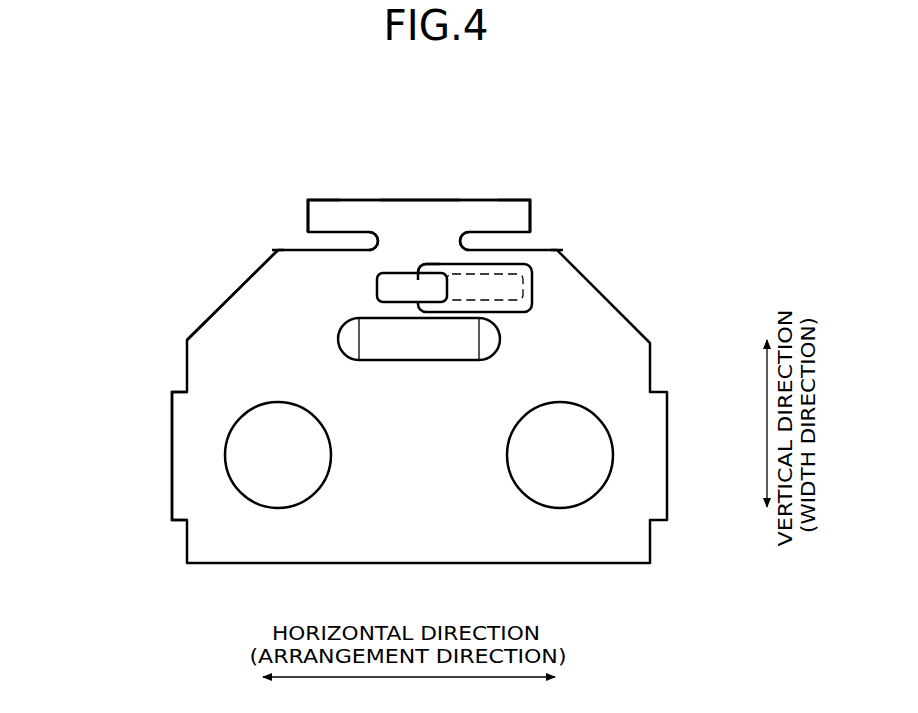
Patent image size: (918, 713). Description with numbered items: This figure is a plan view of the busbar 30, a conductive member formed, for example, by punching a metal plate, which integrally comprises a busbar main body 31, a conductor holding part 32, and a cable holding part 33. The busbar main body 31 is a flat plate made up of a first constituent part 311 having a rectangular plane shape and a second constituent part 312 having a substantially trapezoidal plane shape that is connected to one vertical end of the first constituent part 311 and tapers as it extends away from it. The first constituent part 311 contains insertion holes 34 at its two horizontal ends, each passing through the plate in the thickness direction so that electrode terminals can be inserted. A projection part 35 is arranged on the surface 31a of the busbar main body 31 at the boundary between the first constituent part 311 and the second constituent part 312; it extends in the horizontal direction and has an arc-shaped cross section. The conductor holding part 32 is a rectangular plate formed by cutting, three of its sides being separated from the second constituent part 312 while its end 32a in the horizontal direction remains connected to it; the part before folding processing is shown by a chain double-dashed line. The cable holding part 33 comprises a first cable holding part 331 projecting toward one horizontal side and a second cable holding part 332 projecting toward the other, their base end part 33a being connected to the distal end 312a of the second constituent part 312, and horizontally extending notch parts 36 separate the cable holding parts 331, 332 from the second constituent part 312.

The busbar 30 is at (236, 158).
The busbar main body 31 is at (68, 307).
The first constituent part 311 is at (166, 432).
The second constituent part 312 is at (201, 319).
The distal end 312a is at (280, 249).
The surface 31a is at (585, 362).
The conductor holding part 32 is at (405, 268).
The end 32a is at (424, 264).
The cable holding part 33 is at (305, 92).
The first cable holding part 331 is at (518, 198).
The second cable holding part 332 is at (322, 198).
The base end part 33a is at (410, 200).
The insertion holes 34 is at (532, 499).
The projection part 35 is at (505, 332).
The notch parts 36 is at (372, 243).